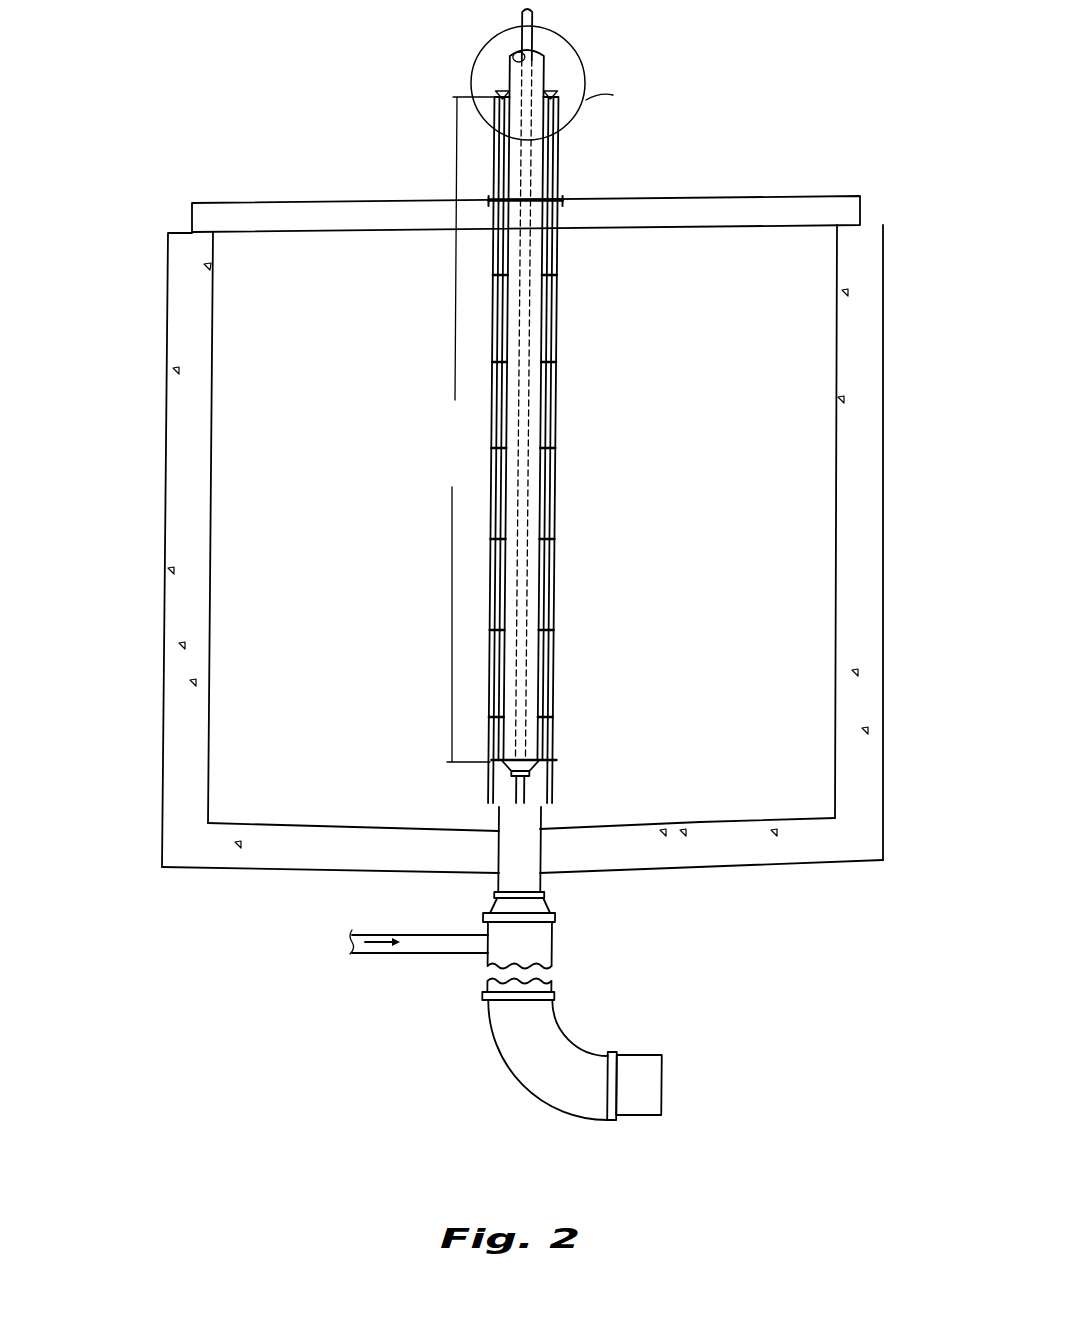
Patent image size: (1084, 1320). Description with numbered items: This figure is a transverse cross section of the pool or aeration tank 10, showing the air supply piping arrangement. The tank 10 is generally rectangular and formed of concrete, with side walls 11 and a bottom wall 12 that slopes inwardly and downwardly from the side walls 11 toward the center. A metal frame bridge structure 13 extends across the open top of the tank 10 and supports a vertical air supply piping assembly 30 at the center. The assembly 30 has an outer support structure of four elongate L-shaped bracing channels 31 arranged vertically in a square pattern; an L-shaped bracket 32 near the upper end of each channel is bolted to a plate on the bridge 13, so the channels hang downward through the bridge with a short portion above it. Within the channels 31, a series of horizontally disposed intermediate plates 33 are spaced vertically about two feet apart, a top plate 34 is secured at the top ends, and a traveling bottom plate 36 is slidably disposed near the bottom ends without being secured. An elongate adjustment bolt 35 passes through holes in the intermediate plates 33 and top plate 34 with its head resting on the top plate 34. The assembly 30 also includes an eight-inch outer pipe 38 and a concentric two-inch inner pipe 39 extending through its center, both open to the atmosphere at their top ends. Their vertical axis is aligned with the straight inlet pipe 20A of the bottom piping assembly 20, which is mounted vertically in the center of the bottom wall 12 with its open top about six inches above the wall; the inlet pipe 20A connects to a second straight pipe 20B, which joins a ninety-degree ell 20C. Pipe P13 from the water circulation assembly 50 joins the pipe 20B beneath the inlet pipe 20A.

The pool or aeration tank 10 is at (498, 510).
The side walls 11 is at (166, 517).
The bottom wall 12 is at (272, 823).
The metal frame bridge structure 13 is at (696, 198).
The bottom piping assembly 20 is at (607, 967).
The straight inlet pipe 20A is at (538, 828).
The second straight pipe 20B is at (540, 946).
The 90° ell 20C is at (523, 1062).
The air supply piping assembly 30 is at (586, 401).
The bracing channels 31 is at (553, 393).
The L-shaped bracket 32 is at (558, 196).
The intermediate plates 33 is at (553, 350).
The top plate 34 is at (557, 97).
The elongate adjustment bolt 35 is at (553, 512).
The traveling bottom plate 36 is at (551, 760).
The outer pipe 38 is at (540, 598).
The inner pipe 39 is at (521, 15).
The pipe P13 is at (437, 935).
The water circulation assembly 50 is at (258, 962).